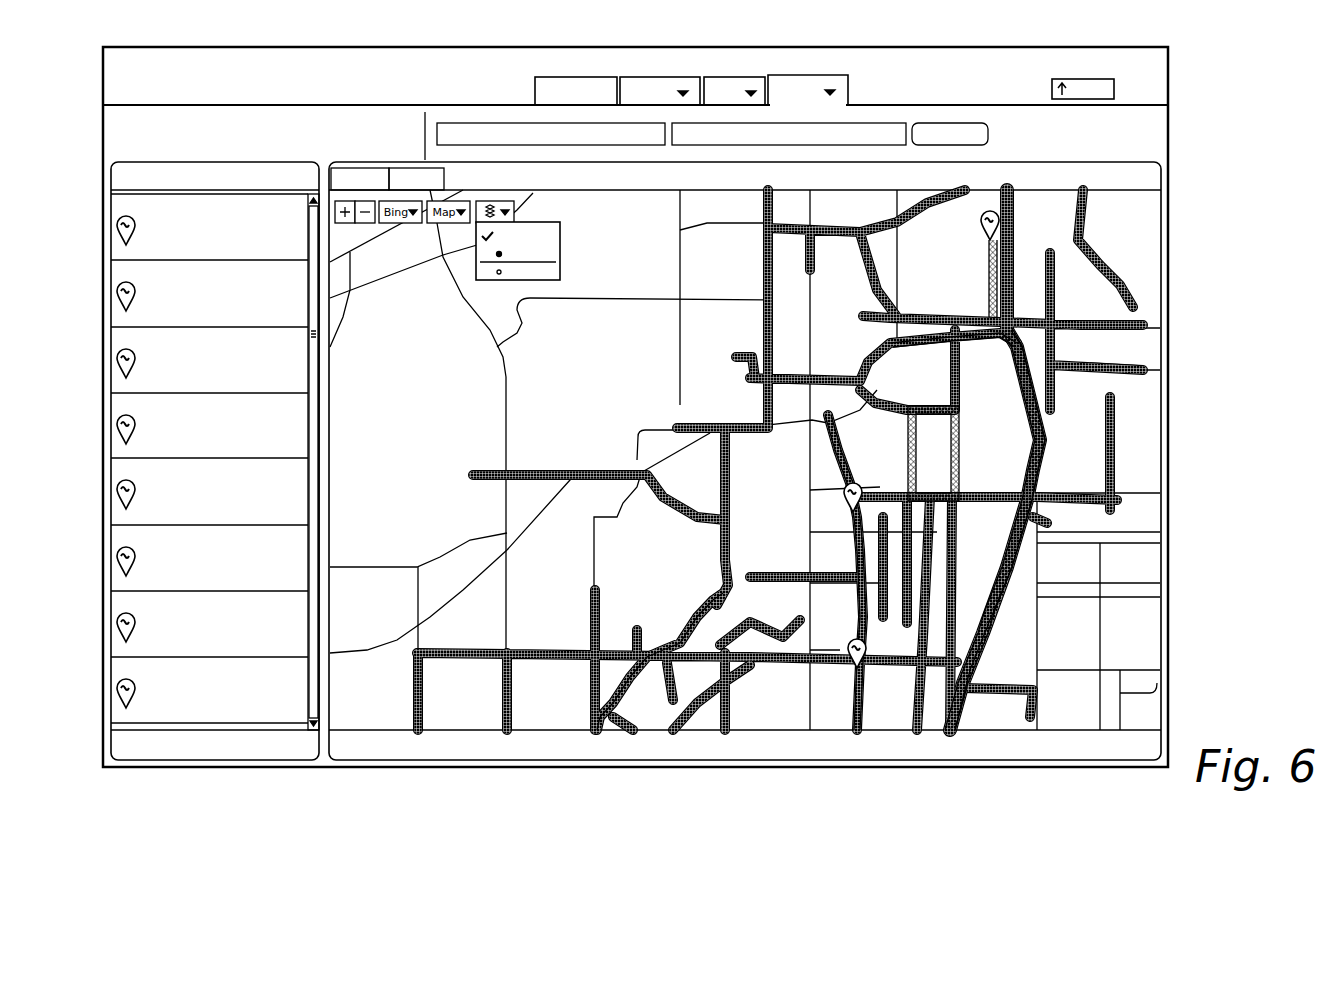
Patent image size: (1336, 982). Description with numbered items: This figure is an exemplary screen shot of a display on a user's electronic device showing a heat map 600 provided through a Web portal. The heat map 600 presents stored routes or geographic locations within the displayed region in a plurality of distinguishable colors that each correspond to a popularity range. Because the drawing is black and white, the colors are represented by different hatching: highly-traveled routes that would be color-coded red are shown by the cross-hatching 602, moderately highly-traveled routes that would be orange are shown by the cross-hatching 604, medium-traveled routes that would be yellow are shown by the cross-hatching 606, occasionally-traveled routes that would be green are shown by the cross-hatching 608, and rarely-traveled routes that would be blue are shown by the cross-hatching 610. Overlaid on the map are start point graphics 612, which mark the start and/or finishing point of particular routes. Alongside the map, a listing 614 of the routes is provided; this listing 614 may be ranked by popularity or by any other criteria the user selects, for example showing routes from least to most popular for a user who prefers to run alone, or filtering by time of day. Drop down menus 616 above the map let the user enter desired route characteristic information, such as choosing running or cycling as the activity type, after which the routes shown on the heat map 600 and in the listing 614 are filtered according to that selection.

The heat map 600 is at (549, 754).
The cross-hatching 602 is at (986, 277).
The cross-hatching 604 is at (1012, 573).
The cross-hatching 606 is at (990, 627).
The cross-hatching 608 is at (890, 341).
The cross-hatching 610 is at (858, 318).
The start point graphics 612 is at (993, 205).
The listing 614 is at (181, 148).
The drop down menus 616 is at (494, 182).